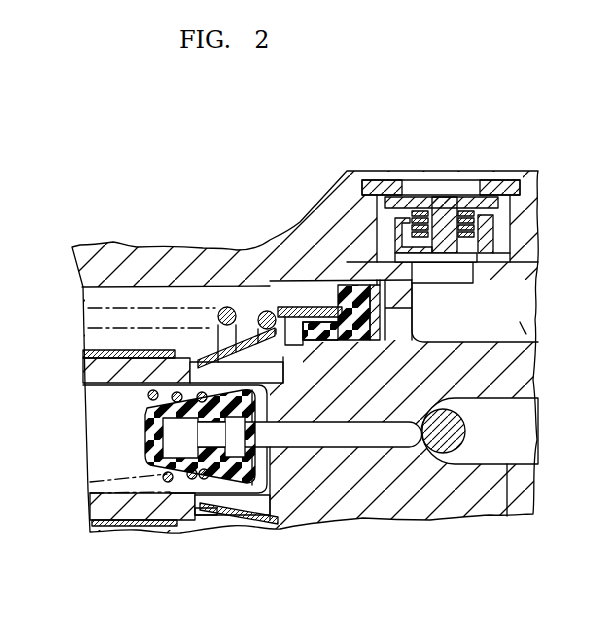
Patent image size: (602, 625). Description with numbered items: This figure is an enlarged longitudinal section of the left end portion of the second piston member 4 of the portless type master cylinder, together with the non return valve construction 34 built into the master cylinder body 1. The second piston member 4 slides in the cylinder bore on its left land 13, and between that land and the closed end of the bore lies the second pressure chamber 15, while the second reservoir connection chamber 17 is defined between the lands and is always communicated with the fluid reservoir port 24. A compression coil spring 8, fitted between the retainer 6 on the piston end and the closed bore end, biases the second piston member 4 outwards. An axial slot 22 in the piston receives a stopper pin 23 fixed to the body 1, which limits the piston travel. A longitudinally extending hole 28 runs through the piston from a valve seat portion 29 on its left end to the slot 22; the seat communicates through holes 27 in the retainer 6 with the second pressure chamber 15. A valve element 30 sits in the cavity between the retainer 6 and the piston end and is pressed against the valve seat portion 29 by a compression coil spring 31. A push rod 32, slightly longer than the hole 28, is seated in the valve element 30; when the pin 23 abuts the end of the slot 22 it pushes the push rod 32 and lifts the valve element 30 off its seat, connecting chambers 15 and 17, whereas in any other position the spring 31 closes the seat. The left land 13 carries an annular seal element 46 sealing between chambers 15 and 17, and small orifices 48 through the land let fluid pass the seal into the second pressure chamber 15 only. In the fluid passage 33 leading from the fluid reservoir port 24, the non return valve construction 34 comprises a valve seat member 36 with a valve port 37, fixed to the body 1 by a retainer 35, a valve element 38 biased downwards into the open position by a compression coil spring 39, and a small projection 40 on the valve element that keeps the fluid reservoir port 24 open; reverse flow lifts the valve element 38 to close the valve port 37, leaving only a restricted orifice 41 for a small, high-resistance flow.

The master cylinder body 1 is at (135, 263).
The second pressure chamber 15 is at (158, 293).
The compression coil spring 8 is at (230, 300).
The compression coil spring 39 is at (375, 197).
The retainer 6 is at (295, 310).
The restricted orifice 41 is at (375, 277).
The valve port 37 is at (425, 198).
The valve seat member 36 is at (473, 200).
The retainer 35 is at (497, 180).
The non return valve construction 34 is at (500, 218).
The fluid passage 33 is at (505, 230).
The valve element 38 is at (483, 255).
The small projection 40 is at (520, 265).
The fluid reservoir port 24 is at (455, 278).
The left land 13 is at (403, 330).
The second reservoir connection chamber 17 is at (523, 328).
The stopper pin 23 is at (458, 415).
The small orifices 48 is at (395, 318).
The annular seal element 46 is at (343, 332).
The holes 27 is at (266, 384).
The valve seat portion 29 is at (260, 402).
The longitudinally extending hole 28 is at (350, 448).
The push rod 32 is at (384, 434).
The compression coil spring 31 is at (167, 482).
The valve element 30 is at (230, 478).
The second piston member 4 is at (467, 495).
The slot 22 is at (500, 450).